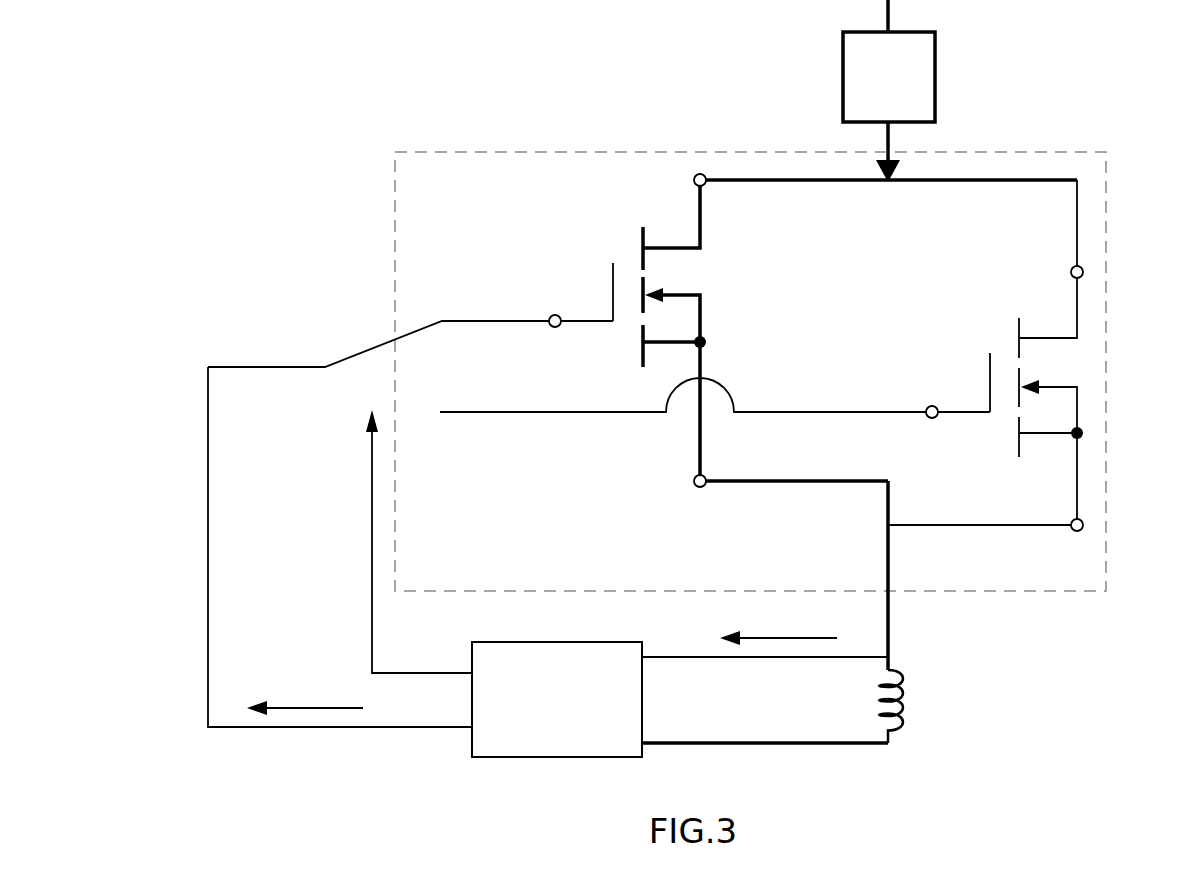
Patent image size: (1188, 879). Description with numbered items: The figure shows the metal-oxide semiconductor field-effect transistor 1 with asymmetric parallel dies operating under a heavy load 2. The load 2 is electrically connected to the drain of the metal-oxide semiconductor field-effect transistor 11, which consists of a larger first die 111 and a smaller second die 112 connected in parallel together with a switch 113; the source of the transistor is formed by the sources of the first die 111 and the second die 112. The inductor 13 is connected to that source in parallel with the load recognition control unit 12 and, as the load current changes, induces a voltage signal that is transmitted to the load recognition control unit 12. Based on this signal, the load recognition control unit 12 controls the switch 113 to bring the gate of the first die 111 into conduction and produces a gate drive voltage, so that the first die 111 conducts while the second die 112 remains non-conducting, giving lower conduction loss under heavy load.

The metal-oxide semiconductor field-effect transistor with asymmetric parallel dies 1 is at (94, 68).
The load 2 is at (935, 72).
The metal-oxide semiconductor field-effect transistor 11 is at (696, 371).
The load recognition control unit 12 is at (472, 757).
The inductor 13 is at (903, 690).
The first die 111 is at (643, 250).
The second die 112 is at (1019, 340).
The switch 113 is at (372, 343).